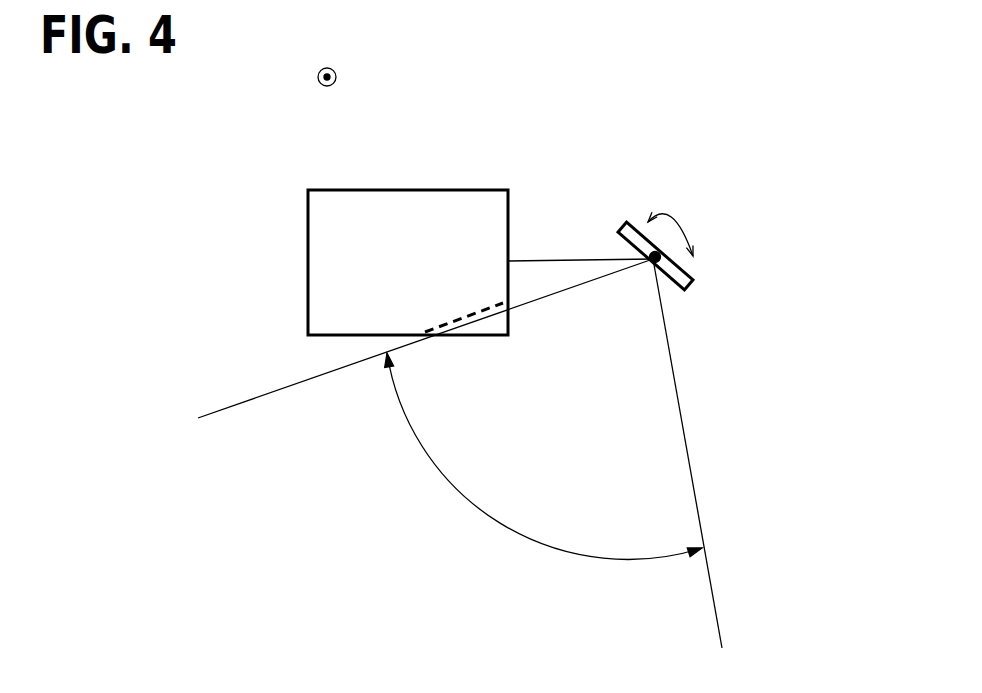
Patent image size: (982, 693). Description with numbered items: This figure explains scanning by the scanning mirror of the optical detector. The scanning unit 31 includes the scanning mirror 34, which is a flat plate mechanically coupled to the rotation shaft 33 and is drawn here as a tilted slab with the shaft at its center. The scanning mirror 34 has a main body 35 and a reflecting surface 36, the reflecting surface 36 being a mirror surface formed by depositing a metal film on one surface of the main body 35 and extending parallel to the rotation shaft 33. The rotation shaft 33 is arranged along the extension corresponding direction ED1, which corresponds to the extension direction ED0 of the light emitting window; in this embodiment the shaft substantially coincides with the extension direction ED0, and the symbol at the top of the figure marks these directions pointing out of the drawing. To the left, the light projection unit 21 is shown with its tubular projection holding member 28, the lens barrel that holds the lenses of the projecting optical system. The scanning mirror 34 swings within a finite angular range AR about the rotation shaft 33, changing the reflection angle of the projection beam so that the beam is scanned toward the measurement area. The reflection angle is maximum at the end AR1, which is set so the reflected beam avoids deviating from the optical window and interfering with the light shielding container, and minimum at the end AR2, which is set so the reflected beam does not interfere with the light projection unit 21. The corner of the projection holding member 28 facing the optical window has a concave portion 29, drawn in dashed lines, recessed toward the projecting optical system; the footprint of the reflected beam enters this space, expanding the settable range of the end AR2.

The light projection unit 21 is at (408, 237).
The projection holding member 28 is at (372, 190).
The concave portion 29 is at (480, 312).
The scanning unit 31 is at (712, 258).
The scanning mirror 34 is at (712, 258).
The rotation shaft 33 is at (648, 248).
The main body 35 is at (697, 273).
The reflecting surface 36 is at (677, 291).
The extension direction ED0 is at (386, 74).
The extension corresponding direction ED1 is at (337, 75).
The finite angular range AR is at (455, 588).
The end of the finite angular range (maximum reflection angle) AR1 is at (716, 616).
The end of the finite angular range (minimum reflection angle) AR2 is at (248, 400).